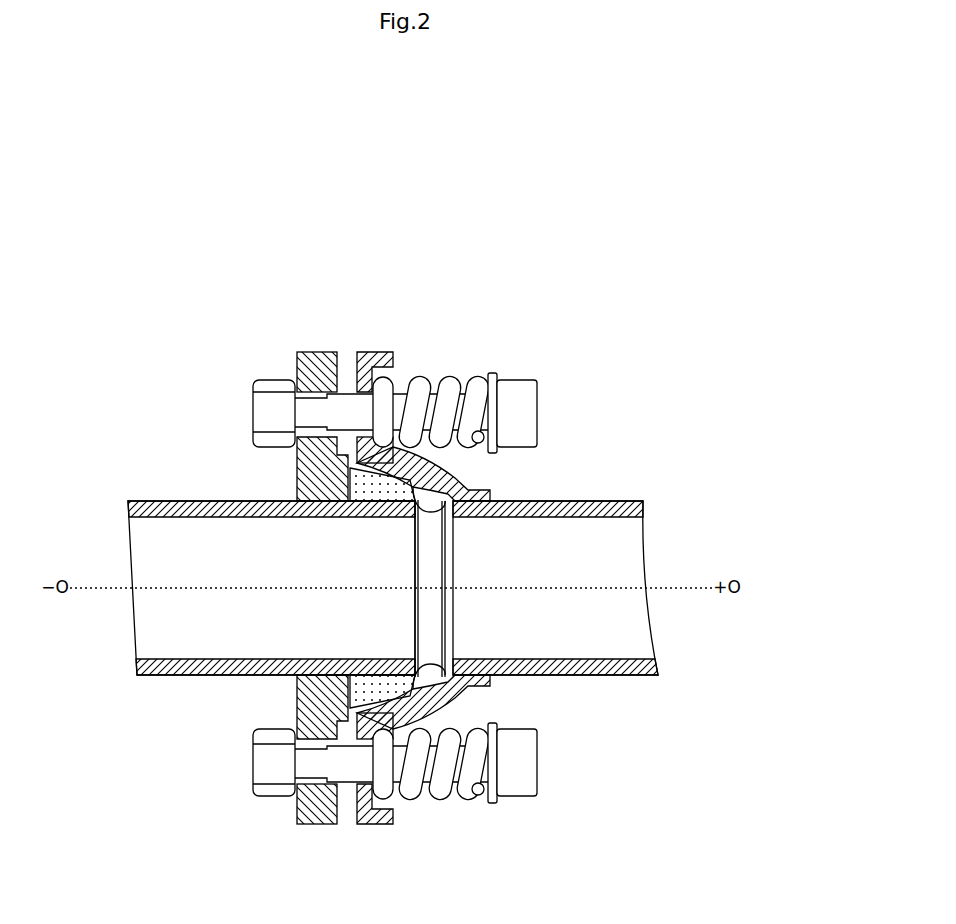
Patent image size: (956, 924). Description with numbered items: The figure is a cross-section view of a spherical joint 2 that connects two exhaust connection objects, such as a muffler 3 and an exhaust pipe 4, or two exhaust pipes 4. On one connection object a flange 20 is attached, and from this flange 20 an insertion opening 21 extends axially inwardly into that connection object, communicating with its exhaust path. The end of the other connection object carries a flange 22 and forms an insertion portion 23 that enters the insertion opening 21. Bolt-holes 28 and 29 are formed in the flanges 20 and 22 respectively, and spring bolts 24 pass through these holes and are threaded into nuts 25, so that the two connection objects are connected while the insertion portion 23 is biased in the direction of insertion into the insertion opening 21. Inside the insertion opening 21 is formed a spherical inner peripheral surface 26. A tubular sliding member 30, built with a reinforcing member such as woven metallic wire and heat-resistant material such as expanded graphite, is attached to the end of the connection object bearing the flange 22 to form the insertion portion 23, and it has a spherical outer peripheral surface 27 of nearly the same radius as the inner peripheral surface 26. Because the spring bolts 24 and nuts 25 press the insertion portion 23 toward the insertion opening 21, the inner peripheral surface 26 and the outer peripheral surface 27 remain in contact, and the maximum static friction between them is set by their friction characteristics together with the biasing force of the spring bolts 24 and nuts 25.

The spherical joint 2 is at (702, 206).
The muffler 3 is at (148, 500).
The exhaust pipe 4 is at (618, 500).
The flange 20 is at (375, 352).
The insertion opening 21 is at (419, 588).
The flange 22 is at (318, 352).
The insertion portion 23 is at (415, 613).
The spring bolt 24 is at (530, 380).
The nut 25 is at (262, 381).
The inner peripheral surface 26 is at (458, 493).
The outer peripheral surface 27 is at (370, 722).
The bolt-hole 28 is at (405, 368).
The bolt-hole 29 is at (288, 376).
The sliding member 30 is at (298, 485).